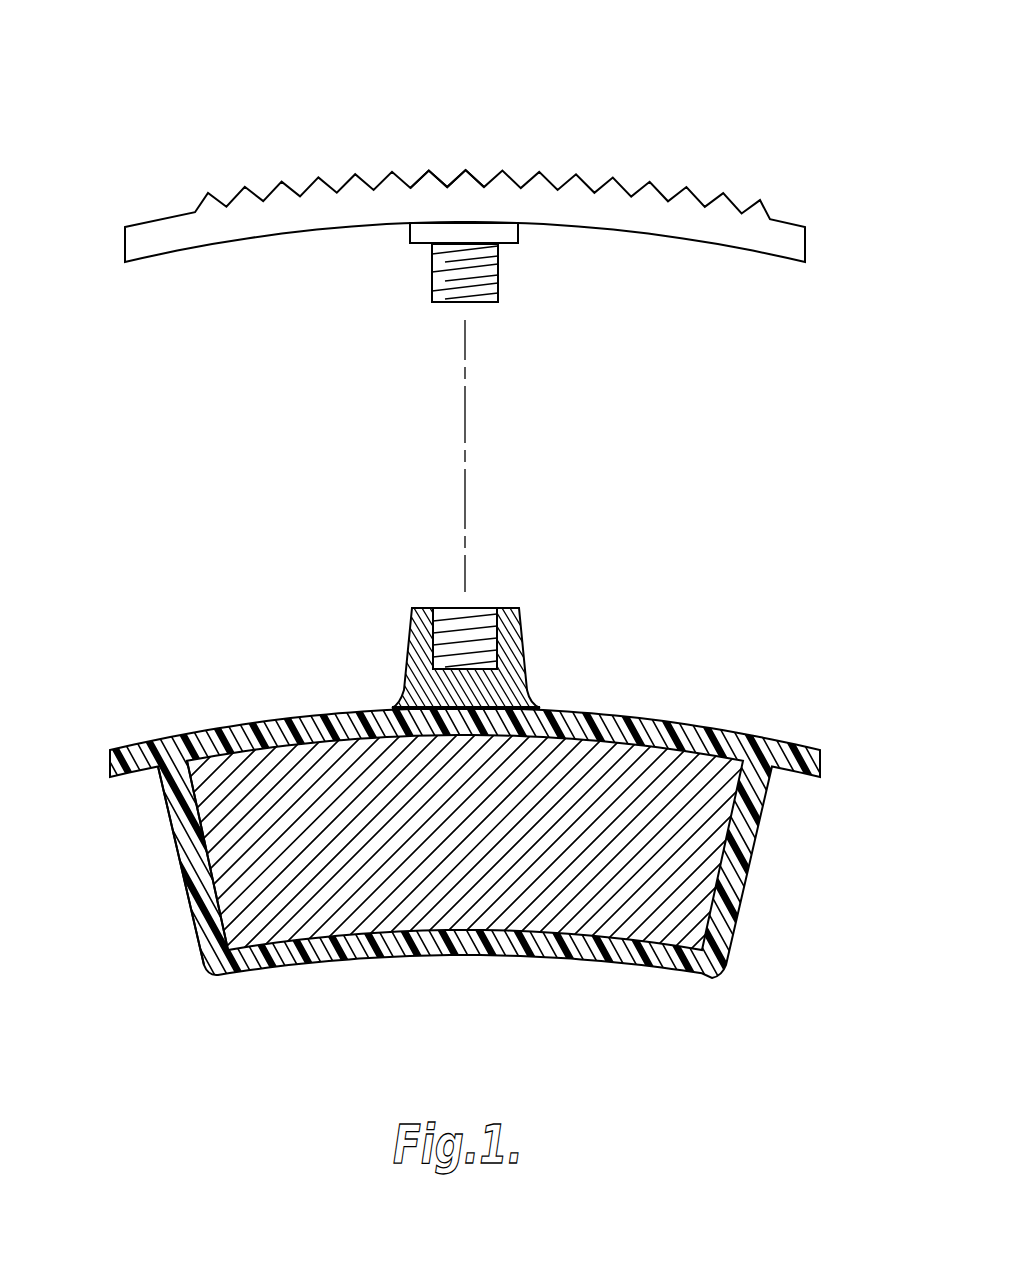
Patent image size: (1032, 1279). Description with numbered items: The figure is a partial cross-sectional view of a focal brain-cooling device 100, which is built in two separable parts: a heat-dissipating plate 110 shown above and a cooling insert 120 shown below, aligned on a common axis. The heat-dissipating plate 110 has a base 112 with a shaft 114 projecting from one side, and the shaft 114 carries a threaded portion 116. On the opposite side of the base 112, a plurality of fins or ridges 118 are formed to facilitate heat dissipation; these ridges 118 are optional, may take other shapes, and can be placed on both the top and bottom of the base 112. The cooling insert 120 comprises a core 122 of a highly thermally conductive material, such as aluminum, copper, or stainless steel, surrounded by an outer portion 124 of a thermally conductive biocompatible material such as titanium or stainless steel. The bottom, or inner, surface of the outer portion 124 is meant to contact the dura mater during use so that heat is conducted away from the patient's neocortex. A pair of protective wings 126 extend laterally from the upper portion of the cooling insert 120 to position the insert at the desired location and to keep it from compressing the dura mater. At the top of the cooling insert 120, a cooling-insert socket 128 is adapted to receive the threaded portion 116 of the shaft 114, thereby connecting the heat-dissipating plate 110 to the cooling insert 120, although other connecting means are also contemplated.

The focal brain-cooling device 100 is at (798, 84).
The heat-dissipating plate 110 is at (786, 205).
The base 112 is at (805, 238).
The shaft 114 is at (519, 232).
The threaded portion 116 is at (432, 265).
The fins or ridges 118 is at (427, 173).
The cooling insert 120 is at (699, 715).
The core 122 is at (476, 841).
The outer portion 124 is at (188, 870).
The protective wings 126 is at (102, 747).
The cooling-insert socket 128 is at (519, 626).